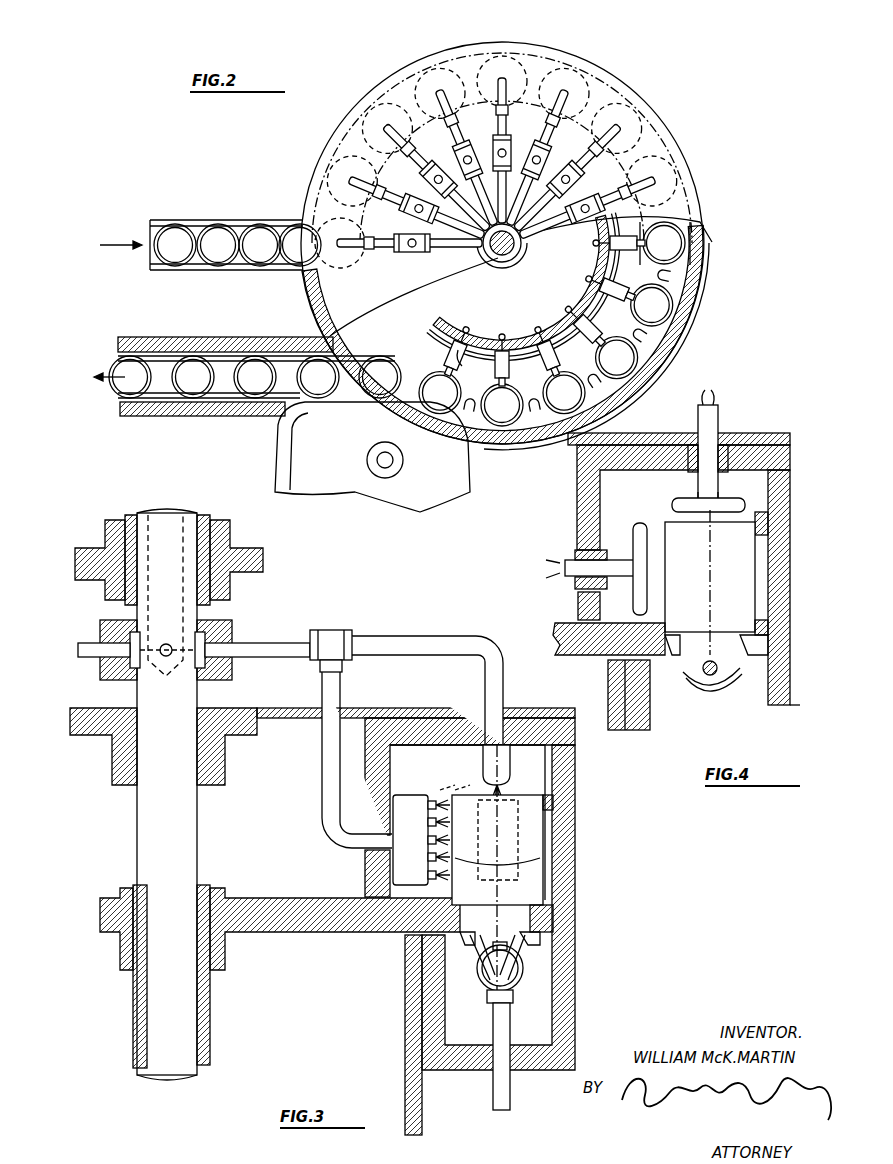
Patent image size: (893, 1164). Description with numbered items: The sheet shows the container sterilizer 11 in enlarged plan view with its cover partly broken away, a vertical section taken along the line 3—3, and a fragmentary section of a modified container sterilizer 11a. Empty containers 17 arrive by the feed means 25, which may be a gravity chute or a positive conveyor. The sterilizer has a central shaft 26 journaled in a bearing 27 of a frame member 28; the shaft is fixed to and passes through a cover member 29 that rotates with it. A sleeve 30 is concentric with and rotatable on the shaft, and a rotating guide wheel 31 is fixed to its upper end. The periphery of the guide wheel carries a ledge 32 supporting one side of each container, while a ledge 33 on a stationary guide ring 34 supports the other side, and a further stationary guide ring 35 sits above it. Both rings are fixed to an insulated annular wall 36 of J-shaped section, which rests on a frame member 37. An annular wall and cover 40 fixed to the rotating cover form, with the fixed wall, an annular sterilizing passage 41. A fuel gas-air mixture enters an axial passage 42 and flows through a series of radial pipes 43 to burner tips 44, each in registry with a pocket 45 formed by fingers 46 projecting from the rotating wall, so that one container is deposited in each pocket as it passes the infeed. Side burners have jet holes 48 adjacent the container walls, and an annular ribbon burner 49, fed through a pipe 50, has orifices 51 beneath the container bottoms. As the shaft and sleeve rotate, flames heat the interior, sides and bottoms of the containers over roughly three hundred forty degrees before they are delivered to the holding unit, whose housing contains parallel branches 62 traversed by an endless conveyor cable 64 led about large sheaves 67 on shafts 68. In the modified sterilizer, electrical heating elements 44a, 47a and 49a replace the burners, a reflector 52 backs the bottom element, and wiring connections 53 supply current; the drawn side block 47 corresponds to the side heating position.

In FIG. 2, the container sterilizer 11 is at (610, 62).
In FIG. 3, the container sterilizer 11 is at (440, 636).
In FIG. 4, the modified container sterilizer 11a is at (766, 431).
In FIG. 2, the section line 3— 3 is at (690, 160).
In FIG. 2, the container 17 is at (378, 108).
In FIG. 3, the container 17 is at (540, 885).
In FIG. 4, the container 17 is at (710, 582).
In FIG. 2, the feed means 25 is at (256, 223).
In FIG. 2, the central shaft 26 is at (505, 262).
In FIG. 3, the central shaft 26 is at (198, 852).
In FIG. 3, the bearing 27 is at (212, 596).
In FIG. 3, the frame member 28 is at (235, 548).
In FIG. 2, the cover member 29 is at (502, 148).
In FIG. 3, the cover member 29 is at (272, 706).
In FIG. 4, the cover member 29 is at (790, 441).
In FIG. 3, the sleeve 30 is at (210, 1025).
In FIG. 3, the rotating guide wheel 31 is at (292, 898).
In FIG. 4, the rotating guide wheel 31 is at (578, 652).
In FIG. 3, the ledge 32 is at (475, 956).
In FIG. 4, the ledge 32 is at (670, 655).
In FIG. 3, the ledge 33 is at (523, 956).
In FIG. 4, the ledge 33 is at (768, 648).
In FIG. 3, the stationary guide ring 34 is at (556, 920).
In FIG. 4, the stationary guide ring 34 is at (768, 630).
In FIG. 3, the stationary guide ring 35 is at (555, 802).
In FIG. 4, the stationary guide ring 35 is at (768, 528).
In FIG. 2, the insulated annular wall 36 is at (668, 352).
In FIG. 3, the insulated annular wall 36 is at (578, 985).
In FIG. 4, the insulated annular wall 36 is at (790, 572).
In FIG. 3, the frame member 37 is at (405, 1025).
In FIG. 4, the frame member 37 is at (610, 690).
In FIG. 2, the annular wall and cover 40 is at (515, 340).
In FIG. 3, the annular wall and cover 40 is at (438, 718).
In FIG. 4, the annular wall and cover 40 is at (790, 460).
In FIG. 3, the annular sterilizing passage 41 is at (458, 782).
In FIG. 3, the axial passage 42 is at (180, 615).
In FIG. 2, the radial pipe 43 is at (452, 122).
In FIG. 3, the radial pipe 43 is at (402, 638).
In FIG. 3, the burner tip 44 is at (512, 770).
In FIG. 4, the electrical heating element 44a is at (688, 504).
In FIG. 2, the pocket 45 is at (705, 287).
In FIG. 2, the finger 46 is at (600, 272).
In FIG. 3, the finger 46 is at (322, 745).
In FIG. 2, the nozzle block 47 is at (458, 352).
In FIG. 3, the nozzle block 47 is at (420, 795).
In FIG. 4, the electrical heating element 47a is at (628, 535).
In FIG. 3, the jet hole 48 is at (428, 838).
In FIG. 3, the annular ribbon burner 49 is at (520, 980).
In FIG. 4, the electrical heating element 49a is at (718, 672).
In FIG. 3, the pipe 50 is at (493, 1093).
In FIG. 3, the orifice 51 is at (484, 985).
In FIG. 4, the reflector 52 is at (692, 685).
In FIG. 4, the wiring connections 53 is at (715, 410).
In FIG. 2, the parallel branch 62 is at (230, 405).
In FIG. 2, the endless conveyor cable 64 is at (167, 400).
In FIG. 2, the large sheave 67 is at (350, 449).
In FIG. 2, the shaft 68 is at (386, 454).